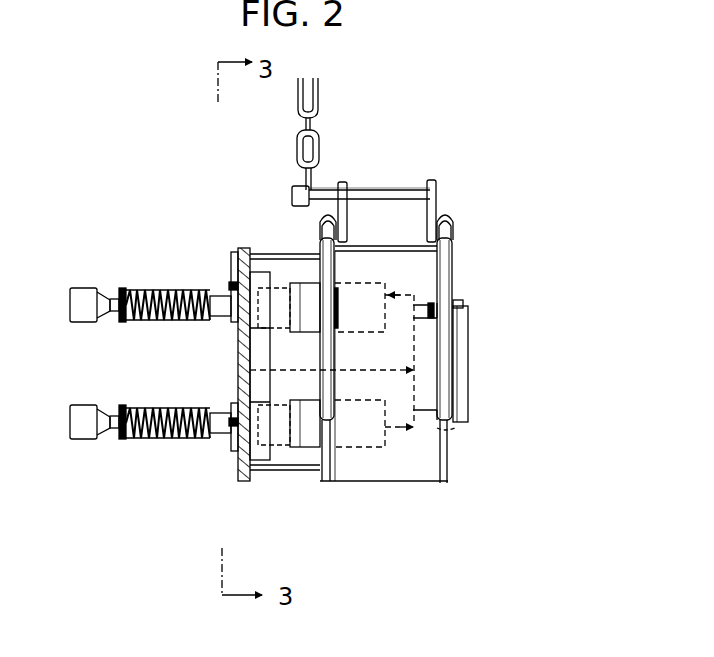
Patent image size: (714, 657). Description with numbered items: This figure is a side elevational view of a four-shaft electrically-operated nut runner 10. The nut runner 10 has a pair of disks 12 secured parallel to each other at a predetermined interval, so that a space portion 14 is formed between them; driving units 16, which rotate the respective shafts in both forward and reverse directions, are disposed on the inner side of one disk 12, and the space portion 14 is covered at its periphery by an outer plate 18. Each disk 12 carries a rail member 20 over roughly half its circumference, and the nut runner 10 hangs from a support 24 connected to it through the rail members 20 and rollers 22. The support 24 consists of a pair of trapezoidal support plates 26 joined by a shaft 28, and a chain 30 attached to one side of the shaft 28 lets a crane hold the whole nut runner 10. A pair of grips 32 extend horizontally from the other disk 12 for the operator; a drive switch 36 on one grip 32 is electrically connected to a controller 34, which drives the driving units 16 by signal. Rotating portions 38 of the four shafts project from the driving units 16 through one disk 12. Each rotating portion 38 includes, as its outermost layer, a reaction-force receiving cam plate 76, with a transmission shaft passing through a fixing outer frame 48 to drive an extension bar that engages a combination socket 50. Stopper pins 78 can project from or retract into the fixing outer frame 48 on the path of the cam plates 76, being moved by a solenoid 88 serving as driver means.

The nut runner 10 is at (502, 248).
The disk 12 is at (448, 462).
The space portion 14 is at (334, 354).
The driving unit 16 is at (352, 332).
The outer plate 18 is at (430, 470).
The rail member 20 is at (453, 270).
The roller 22 is at (320, 222).
The support 24 is at (420, 184).
The support plate 26 is at (344, 182).
The shaft 28 is at (385, 190).
The chain 30 is at (300, 100).
The grip 32 is at (470, 350).
The controller 34 is at (455, 430).
The drive switch 36 is at (465, 305).
The rotating portion 38 is at (305, 276).
The fixing outer frame 48 is at (262, 462).
The combination socket 50 is at (90, 288).
The reaction-force receiving cam plate 76 is at (244, 250).
The stopper pin 78 is at (232, 268).
The solenoid 88 is at (250, 348).